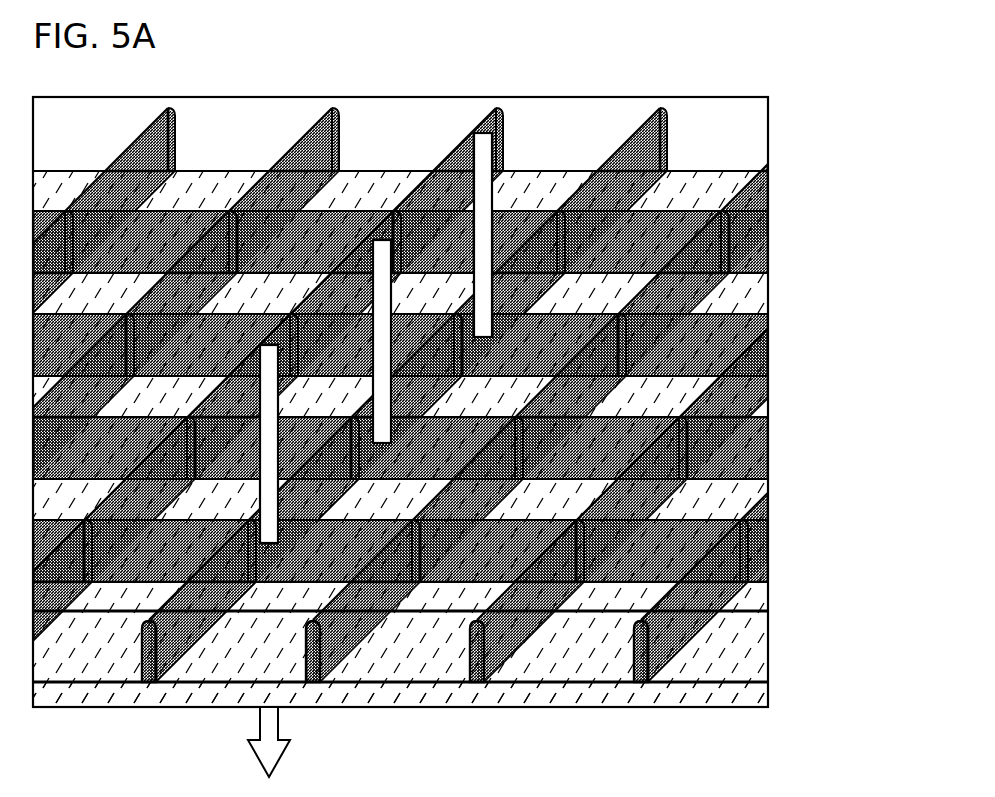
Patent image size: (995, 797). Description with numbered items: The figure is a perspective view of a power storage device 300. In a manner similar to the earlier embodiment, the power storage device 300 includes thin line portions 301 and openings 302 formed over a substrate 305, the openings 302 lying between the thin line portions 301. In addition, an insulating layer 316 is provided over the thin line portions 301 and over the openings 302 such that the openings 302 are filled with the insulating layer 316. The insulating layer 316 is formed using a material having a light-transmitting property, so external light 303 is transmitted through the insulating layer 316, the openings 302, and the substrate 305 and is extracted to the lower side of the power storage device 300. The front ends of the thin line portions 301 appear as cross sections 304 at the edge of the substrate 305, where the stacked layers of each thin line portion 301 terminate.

The power storage device 300 is at (66, 86).
The thin line portions 301 is at (625, 148).
The openings 302 is at (121, 289).
The external light 303 is at (495, 108).
The cross sections 304 is at (147, 687).
The substrate 305 is at (563, 691).
The insulating layer 316 is at (379, 112).